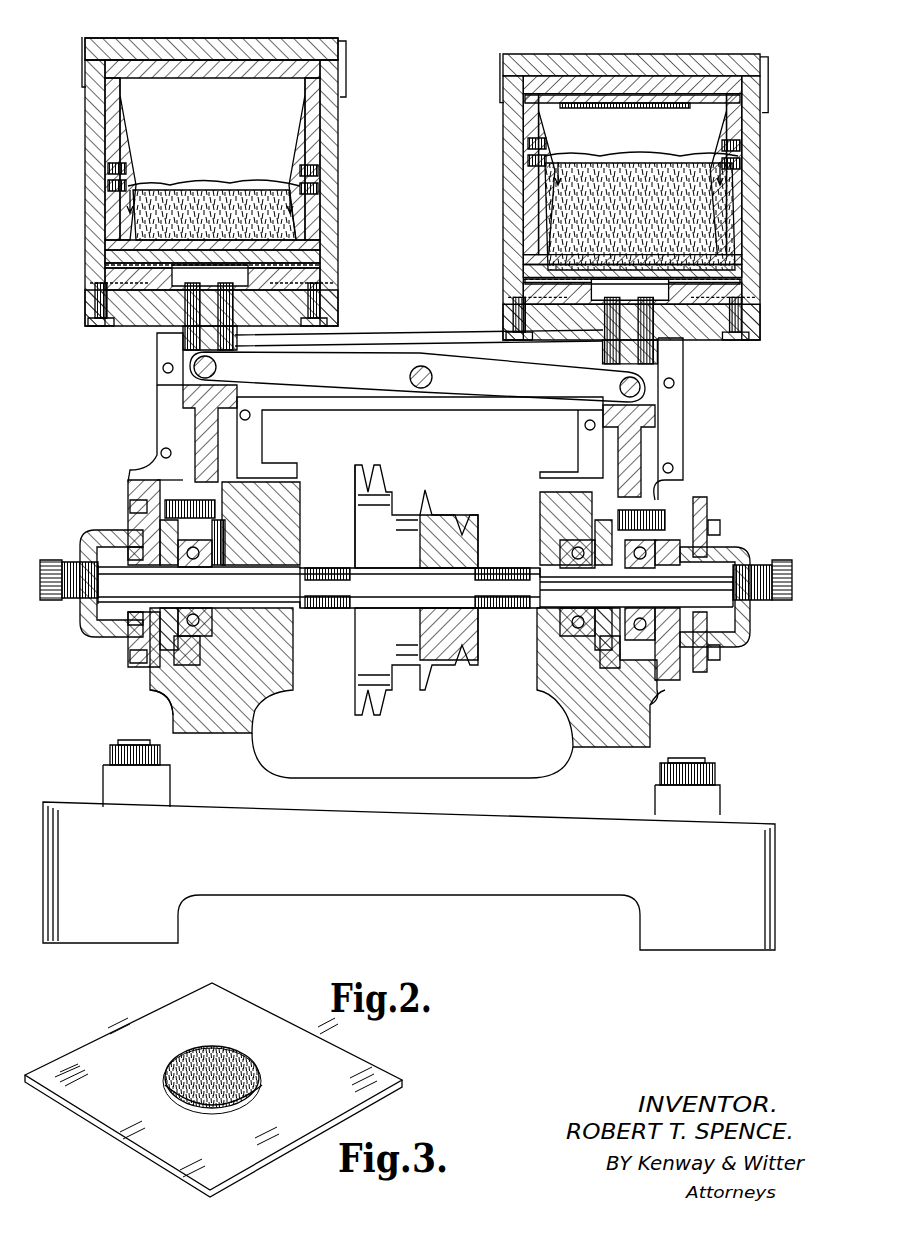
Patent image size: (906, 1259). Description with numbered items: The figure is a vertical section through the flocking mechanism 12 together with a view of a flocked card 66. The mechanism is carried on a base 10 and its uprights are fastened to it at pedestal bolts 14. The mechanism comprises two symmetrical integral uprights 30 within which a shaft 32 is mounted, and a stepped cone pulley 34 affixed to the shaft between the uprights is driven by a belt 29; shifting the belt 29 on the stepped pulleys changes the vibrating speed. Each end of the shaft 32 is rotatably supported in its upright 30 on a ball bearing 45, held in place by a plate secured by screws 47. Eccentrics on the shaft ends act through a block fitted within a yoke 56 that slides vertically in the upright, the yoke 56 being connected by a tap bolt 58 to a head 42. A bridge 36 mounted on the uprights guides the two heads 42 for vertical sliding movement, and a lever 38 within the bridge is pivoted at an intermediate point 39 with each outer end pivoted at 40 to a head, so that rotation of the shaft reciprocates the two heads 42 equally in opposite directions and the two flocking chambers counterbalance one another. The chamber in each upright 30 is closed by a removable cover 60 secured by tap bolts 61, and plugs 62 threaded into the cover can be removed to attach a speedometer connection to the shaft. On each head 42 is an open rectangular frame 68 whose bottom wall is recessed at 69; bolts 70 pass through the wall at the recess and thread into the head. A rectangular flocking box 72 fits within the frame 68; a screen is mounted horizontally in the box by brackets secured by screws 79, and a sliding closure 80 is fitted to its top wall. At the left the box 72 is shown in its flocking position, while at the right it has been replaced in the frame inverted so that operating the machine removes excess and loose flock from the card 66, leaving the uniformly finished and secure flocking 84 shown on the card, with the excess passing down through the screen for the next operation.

In FIG. 2, the base 10 is at (413, 893).
In FIG. 2, the flocking mechanism 12 is at (412, 768).
In FIG. 2, the pedestal bolt 14 is at (108, 753).
In FIG. 2, the belt 29 is at (432, 668).
In FIG. 2, the uprights 30 is at (192, 709).
In FIG. 2, the shaft 32 is at (490, 572).
In FIG. 2, the stepped cone pulley 34 is at (400, 497).
In FIG. 2, the bridge 36 is at (545, 408).
In FIG. 2, the lever 38 is at (372, 366).
In FIG. 2, the intermediate point 39 is at (430, 368).
In FIG. 2, the pivot 40 is at (194, 369).
In FIG. 2, the head 42 is at (190, 395).
In FIG. 2, the ball bearing 45 is at (195, 574).
In FIG. 2, the screws 47 is at (582, 655).
In FIG. 2, the yoke 56 is at (152, 694).
In FIG. 2, the tap bolt 58 is at (172, 500).
In FIG. 2, the removable cover 60 is at (82, 545).
In FIG. 2, the tap bolts 61 is at (716, 528).
In FIG. 2, the plugs 62 is at (55, 597).
In FIG. 2, the card 66 is at (573, 97).
In FIG. 3, the card 66 is at (358, 1085).
In FIG. 2, the open rectangular frame 68 is at (520, 178).
In FIG. 2, the recess 69 is at (290, 272).
In FIG. 2, the bolts 70 is at (192, 320).
In FIG. 2, the flocking box 72 is at (520, 130).
In FIG. 2, the screws 79 is at (320, 205).
In FIG. 2, the sliding closure 80 is at (222, 70).
In FIG. 2, the flocking 84 is at (668, 95).
In FIG. 3, the flocking 84 is at (214, 1050).